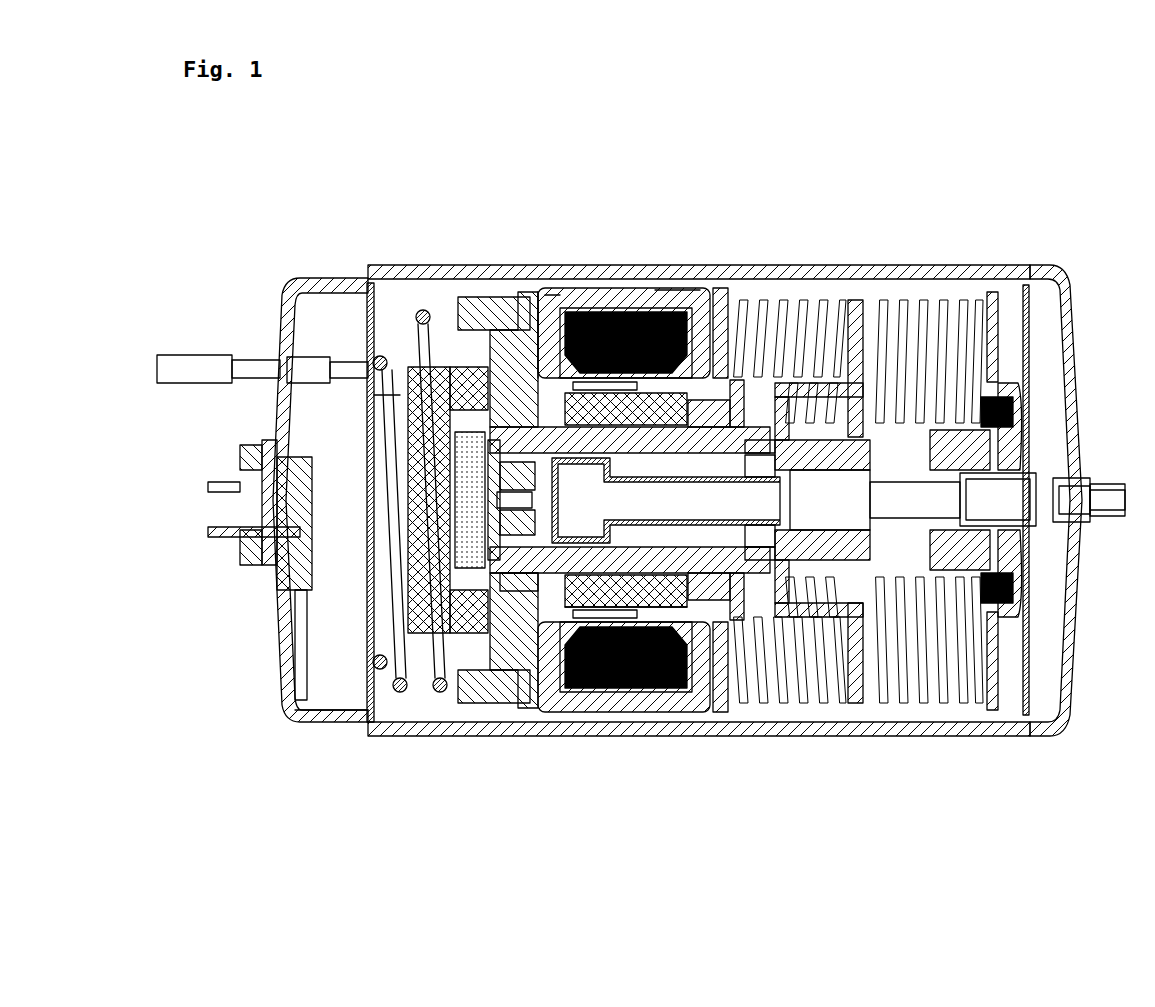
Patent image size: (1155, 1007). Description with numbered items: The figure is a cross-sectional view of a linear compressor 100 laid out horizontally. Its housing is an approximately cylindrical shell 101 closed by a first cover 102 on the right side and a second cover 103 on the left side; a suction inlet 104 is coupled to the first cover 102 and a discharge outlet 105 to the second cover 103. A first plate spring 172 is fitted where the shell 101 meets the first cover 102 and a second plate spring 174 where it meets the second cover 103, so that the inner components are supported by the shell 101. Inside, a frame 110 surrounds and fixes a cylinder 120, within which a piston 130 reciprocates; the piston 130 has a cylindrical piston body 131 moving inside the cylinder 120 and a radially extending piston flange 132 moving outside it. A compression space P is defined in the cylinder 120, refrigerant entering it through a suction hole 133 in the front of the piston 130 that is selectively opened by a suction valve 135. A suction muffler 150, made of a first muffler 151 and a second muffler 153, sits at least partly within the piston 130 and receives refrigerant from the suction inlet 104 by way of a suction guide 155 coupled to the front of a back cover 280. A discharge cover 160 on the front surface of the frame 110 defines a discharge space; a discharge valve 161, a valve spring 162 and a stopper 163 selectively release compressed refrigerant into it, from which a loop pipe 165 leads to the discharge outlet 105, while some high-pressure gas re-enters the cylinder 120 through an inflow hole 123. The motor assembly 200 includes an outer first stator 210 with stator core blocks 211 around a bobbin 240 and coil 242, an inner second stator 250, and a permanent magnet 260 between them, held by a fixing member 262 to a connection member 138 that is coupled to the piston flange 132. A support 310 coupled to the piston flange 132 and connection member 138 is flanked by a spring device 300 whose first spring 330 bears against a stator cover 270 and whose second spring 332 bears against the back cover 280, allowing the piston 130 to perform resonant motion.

The linear compressor 100 is at (768, 185).
The shell 101 is at (833, 276).
The first cover 102 is at (1072, 315).
The second cover 103 is at (318, 277).
The suction inlet 104 is at (1098, 476).
The discharge outlet 105 is at (177, 356).
The frame 110 is at (486, 345).
The cylinder 120 is at (508, 300).
The inflow hole 123 is at (603, 622).
The piston 130 is at (646, 615).
The piston body 131 is at (766, 400).
The piston flange 132 is at (778, 612).
The suction hole 133 is at (520, 700).
The suction valve 135 is at (447, 668).
The connection member 138 is at (716, 575).
The suction muffler 150 is at (827, 575).
The first muffler 151 is at (858, 525).
The second muffler 153 is at (745, 580).
The suction guide 155 is at (1020, 548).
The discharge cover 160 is at (410, 528).
The discharge valve 161 is at (440, 552).
The valve spring 162 is at (446, 300).
The stopper 163 is at (258, 498).
The loop pipe 165 is at (378, 405).
The first plate spring 172 is at (1030, 635).
The second plate spring 174 is at (370, 452).
The motor assembly 200 is at (665, 288).
The first stator 210 is at (583, 288).
The stator core block 211 is at (540, 292).
The bobbin 240 is at (720, 298).
The coil 242 is at (654, 290).
The second stator 250 is at (608, 392).
The permanent magnet 260 is at (632, 312).
The fixing member 262 is at (560, 312).
The stator cover 270 is at (743, 298).
The back cover 280 is at (997, 695).
The spring device 300 is at (893, 298).
The support 310 is at (856, 298).
The first spring 330 is at (795, 298).
The second spring 332 is at (926, 298).
The compression space P is at (307, 708).